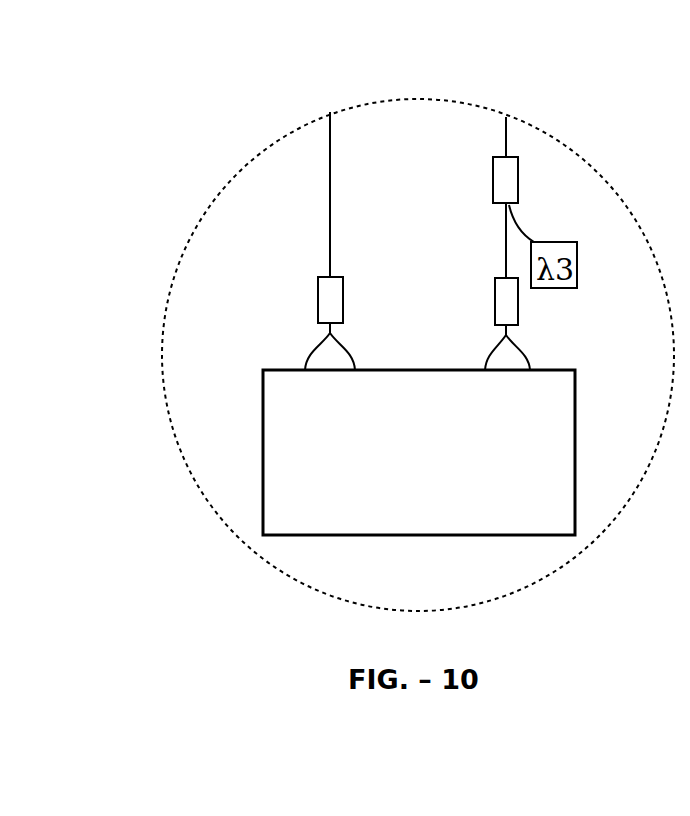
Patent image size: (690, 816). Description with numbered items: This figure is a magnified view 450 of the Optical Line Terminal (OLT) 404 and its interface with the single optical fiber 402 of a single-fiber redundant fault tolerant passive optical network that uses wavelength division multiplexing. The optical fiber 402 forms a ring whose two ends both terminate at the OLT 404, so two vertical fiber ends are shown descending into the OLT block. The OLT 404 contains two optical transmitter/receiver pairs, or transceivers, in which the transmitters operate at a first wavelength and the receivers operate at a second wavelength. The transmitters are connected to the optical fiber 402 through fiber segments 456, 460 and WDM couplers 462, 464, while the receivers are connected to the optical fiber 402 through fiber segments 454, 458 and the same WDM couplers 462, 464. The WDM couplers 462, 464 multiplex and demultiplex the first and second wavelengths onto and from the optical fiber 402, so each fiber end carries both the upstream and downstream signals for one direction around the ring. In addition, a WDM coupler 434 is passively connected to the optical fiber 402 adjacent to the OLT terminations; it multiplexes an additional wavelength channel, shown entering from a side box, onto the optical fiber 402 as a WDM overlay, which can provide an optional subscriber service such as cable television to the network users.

The magnified view 450 is at (268, 79).
The optical fiber 402 is at (506, 135).
The WDM coupler 434 is at (518, 178).
The WDM coupler 464 is at (318, 300).
The WDM coupler 462 is at (495, 298).
The fiber segment 460 is at (330, 334).
The fiber segment 458 is at (348, 340).
The fiber segment 456 is at (506, 345).
The fiber segment 454 is at (521, 350).
The optical line terminal (OLT) 404 is at (278, 535).